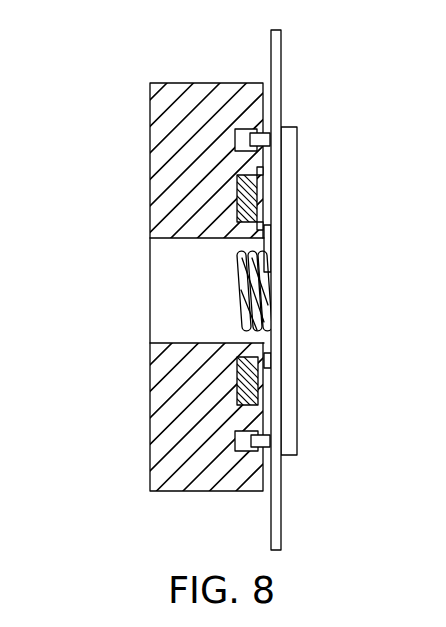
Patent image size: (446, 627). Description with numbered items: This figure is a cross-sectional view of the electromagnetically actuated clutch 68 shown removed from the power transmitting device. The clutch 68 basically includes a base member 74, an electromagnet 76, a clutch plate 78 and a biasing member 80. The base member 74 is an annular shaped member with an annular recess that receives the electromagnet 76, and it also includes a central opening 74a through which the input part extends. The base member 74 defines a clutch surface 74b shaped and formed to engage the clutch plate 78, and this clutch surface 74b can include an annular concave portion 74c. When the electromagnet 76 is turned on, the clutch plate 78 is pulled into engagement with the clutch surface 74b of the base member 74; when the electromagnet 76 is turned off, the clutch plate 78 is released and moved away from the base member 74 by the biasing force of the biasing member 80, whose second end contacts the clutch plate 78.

The clutch 68 is at (139, 55).
The base member 74 is at (180, 405).
The central opening 74a is at (183, 281).
The clutch surface 74b is at (266, 105).
The annular concave portion 74c is at (240, 141).
The electromagnet 76 is at (211, 83).
The clutch plate 78 is at (283, 59).
The biasing member 80 is at (237, 312).